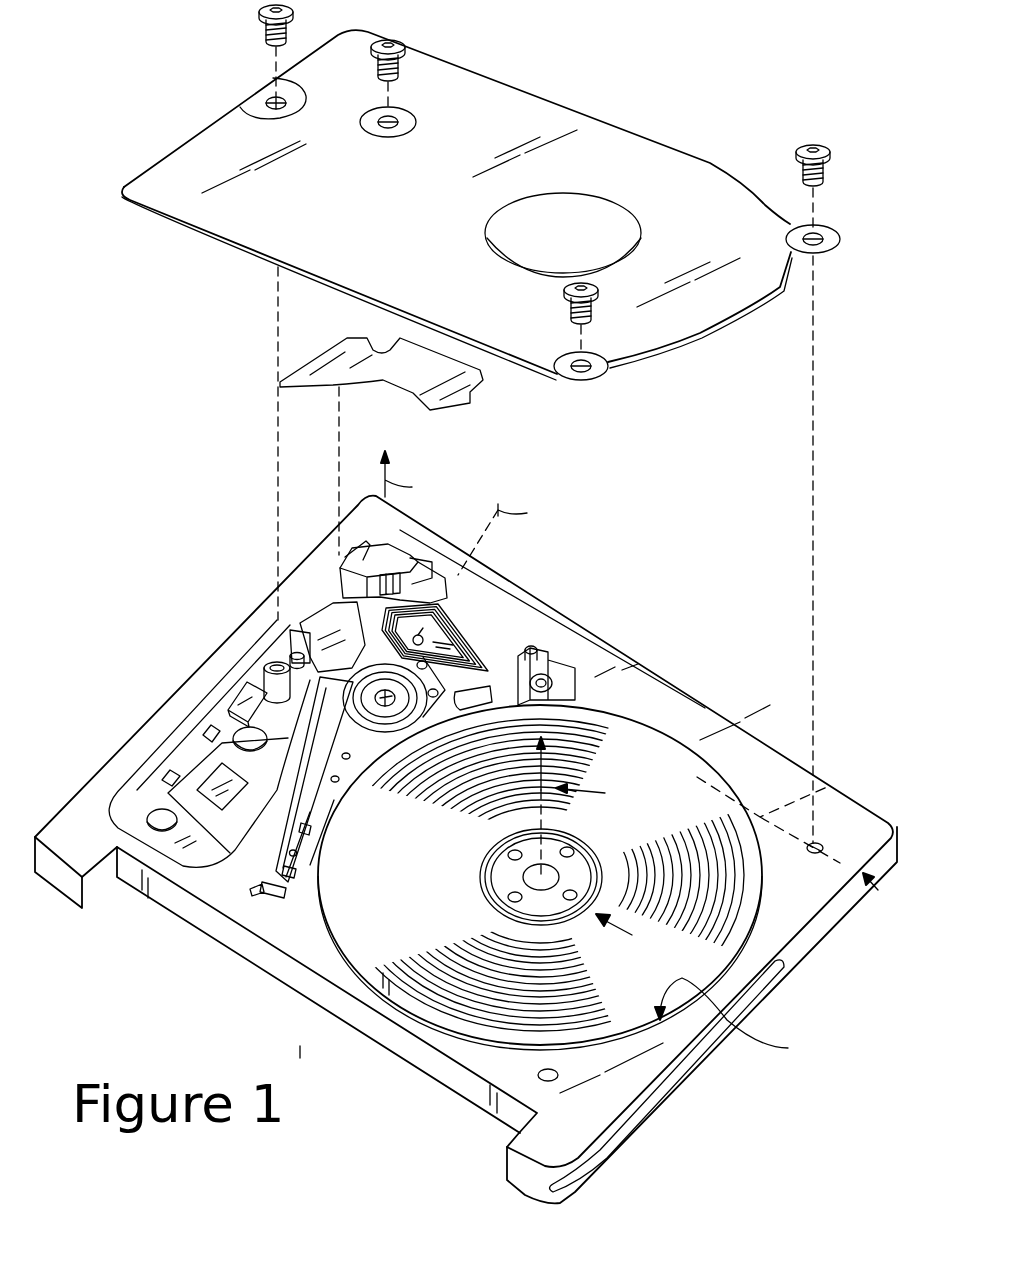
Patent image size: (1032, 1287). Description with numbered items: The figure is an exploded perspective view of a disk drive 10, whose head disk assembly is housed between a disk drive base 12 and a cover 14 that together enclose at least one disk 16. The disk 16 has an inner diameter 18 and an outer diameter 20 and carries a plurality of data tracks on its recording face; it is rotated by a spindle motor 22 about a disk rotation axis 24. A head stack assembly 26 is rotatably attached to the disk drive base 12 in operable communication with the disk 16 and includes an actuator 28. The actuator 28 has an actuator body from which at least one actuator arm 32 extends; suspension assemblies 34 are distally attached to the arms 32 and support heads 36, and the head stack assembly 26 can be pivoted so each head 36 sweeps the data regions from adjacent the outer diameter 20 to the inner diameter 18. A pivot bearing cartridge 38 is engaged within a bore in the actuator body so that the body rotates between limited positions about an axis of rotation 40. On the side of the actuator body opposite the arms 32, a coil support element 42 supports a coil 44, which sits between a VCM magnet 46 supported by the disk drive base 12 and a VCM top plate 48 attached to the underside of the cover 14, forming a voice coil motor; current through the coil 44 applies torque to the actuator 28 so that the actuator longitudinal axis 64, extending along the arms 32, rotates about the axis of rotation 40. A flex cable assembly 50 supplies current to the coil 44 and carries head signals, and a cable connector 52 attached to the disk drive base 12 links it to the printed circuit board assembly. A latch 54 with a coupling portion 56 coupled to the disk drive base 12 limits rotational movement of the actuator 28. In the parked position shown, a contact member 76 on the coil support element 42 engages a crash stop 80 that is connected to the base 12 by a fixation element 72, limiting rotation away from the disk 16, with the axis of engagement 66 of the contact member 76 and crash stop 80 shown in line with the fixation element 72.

The disk drive 10 is at (108, 120).
The disk drive base 12 is at (145, 742).
The cover 14 is at (400, 211).
The disk 16 is at (424, 883).
The inner diameter 18 is at (626, 932).
The outer diameter 20 is at (734, 1019).
The spindle motor 22 is at (577, 867).
The disk rotation axis 24 is at (587, 808).
The head stack assembly 26 is at (330, 655).
The actuator 28 is at (350, 612).
The actuator arm 32 is at (355, 785).
The suspension assembly 34 is at (318, 870).
The head 36 is at (250, 891).
The pivot bearing cartridge 38 is at (313, 677).
The axis of rotation 40 is at (409, 475).
The coil support element 42 is at (492, 645).
The coil 44 is at (460, 620).
The VCM magnet 46 is at (350, 632).
The VCM top plate 48 is at (460, 390).
The flex cable assembly 50 is at (358, 697).
The cable connector 52 is at (147, 797).
The latch 54 is at (353, 577).
The coupling portion 56 is at (362, 598).
The actuator longitudinal axis 64 is at (504, 538).
The axis of engagement 66 is at (842, 865).
The fixation element 72 is at (556, 688).
The contact member 76 is at (527, 658).
The crash stop 80 is at (545, 680).